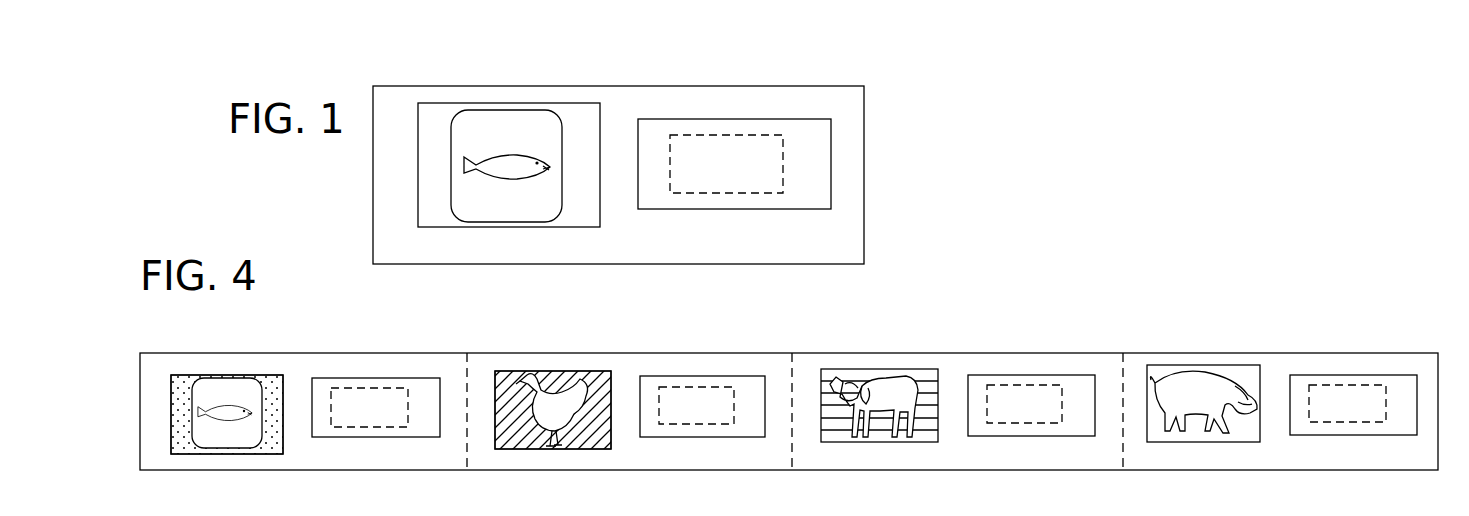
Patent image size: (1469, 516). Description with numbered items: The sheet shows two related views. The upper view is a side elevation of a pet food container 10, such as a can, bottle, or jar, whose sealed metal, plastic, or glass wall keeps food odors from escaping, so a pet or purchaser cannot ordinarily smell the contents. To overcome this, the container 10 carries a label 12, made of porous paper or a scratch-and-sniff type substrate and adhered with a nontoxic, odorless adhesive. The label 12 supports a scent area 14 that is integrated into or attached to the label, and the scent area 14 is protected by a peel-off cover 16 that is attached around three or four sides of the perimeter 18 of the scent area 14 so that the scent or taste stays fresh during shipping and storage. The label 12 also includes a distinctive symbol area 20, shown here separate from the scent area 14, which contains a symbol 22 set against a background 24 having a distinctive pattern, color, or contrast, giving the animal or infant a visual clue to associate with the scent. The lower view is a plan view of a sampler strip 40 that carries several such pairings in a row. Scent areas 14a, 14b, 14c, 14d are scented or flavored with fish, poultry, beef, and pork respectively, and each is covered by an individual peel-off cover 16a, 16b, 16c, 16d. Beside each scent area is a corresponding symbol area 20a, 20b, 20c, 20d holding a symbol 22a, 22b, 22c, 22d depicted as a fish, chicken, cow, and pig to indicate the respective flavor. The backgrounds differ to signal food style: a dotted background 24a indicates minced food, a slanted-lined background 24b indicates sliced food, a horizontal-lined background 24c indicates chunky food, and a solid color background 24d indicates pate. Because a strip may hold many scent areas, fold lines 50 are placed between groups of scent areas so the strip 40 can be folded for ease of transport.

In FIG. 1, the pet food container 10 is at (745, 80).
In FIG. 1, the label 12 is at (394, 96).
In FIG. 1, the scent area 14 is at (708, 150).
In FIG. 1, the peel-off cover 16 is at (653, 128).
In FIG. 1, the perimeter 18 is at (733, 194).
In FIG. 1, the symbol area 20 is at (453, 103).
In FIG. 1, the symbol 22 is at (451, 206).
In FIG. 1, the background 24 is at (580, 217).
In FIG. 4, the sampler strip 40 is at (686, 343).
In FIG. 4, the fold line 50 is at (1126, 370).
In FIG. 4, the scent area 14a is at (375, 428).
In FIG. 4, the peel-off cover 16a is at (420, 376).
In FIG. 4, the symbol area 20a is at (243, 375).
In FIG. 4, the symbol 22a is at (213, 375).
In FIG. 4, the dotted background 24a is at (272, 380).
In FIG. 4, the scent area 14b is at (712, 426).
In FIG. 4, the peel-off cover 16b is at (738, 376).
In FIG. 4, the symbol area 20b is at (552, 373).
In FIG. 4, the symbol 22b is at (570, 425).
In FIG. 4, the slanted-lined background 24b is at (601, 380).
In FIG. 4, the scent area 14c is at (1030, 426).
In FIG. 4, the peel-off cover 16c is at (1067, 376).
In FIG. 4, the symbol area 20c is at (895, 370).
In FIG. 4, the symbol 22c is at (870, 430).
In FIG. 4, the horizontal background 24c is at (926, 375).
In FIG. 4, the scent area 14d is at (1355, 424).
In FIG. 4, the peel-off cover 16d is at (1397, 376).
In FIG. 4, the symbol area 20d is at (1207, 365).
In FIG. 4, the symbol 22d is at (1188, 420).
In FIG. 4, the solid color background 24d is at (1252, 376).